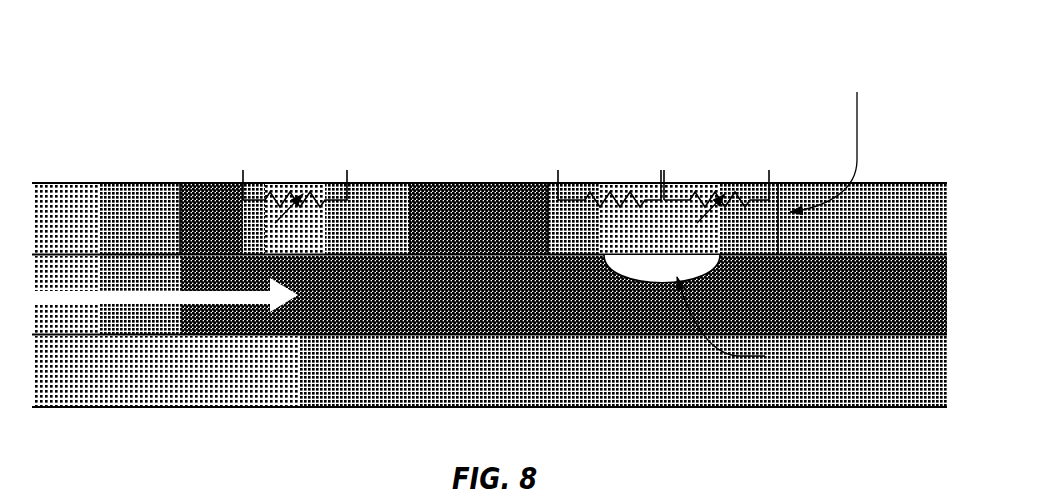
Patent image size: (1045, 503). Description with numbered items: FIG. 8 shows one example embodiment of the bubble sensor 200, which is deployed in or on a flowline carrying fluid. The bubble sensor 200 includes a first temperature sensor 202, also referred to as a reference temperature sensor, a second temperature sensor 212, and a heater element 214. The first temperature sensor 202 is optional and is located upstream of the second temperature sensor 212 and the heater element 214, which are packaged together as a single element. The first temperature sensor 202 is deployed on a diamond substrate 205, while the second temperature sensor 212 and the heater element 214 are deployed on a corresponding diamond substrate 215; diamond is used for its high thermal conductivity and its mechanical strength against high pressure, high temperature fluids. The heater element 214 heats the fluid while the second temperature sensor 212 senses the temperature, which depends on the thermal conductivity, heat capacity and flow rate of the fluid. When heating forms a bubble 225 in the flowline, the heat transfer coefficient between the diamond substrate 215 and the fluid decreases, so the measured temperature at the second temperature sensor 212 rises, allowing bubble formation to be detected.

The bubble sensor 200 is at (326, 76).
The first temperature sensor 202 is at (266, 153).
The diamond substrate 205 is at (376, 203).
The second temperature sensor 212 is at (701, 148).
The heater element 214 is at (596, 146).
The diamond substrate 215 is at (760, 243).
The bubble 225 is at (636, 268).